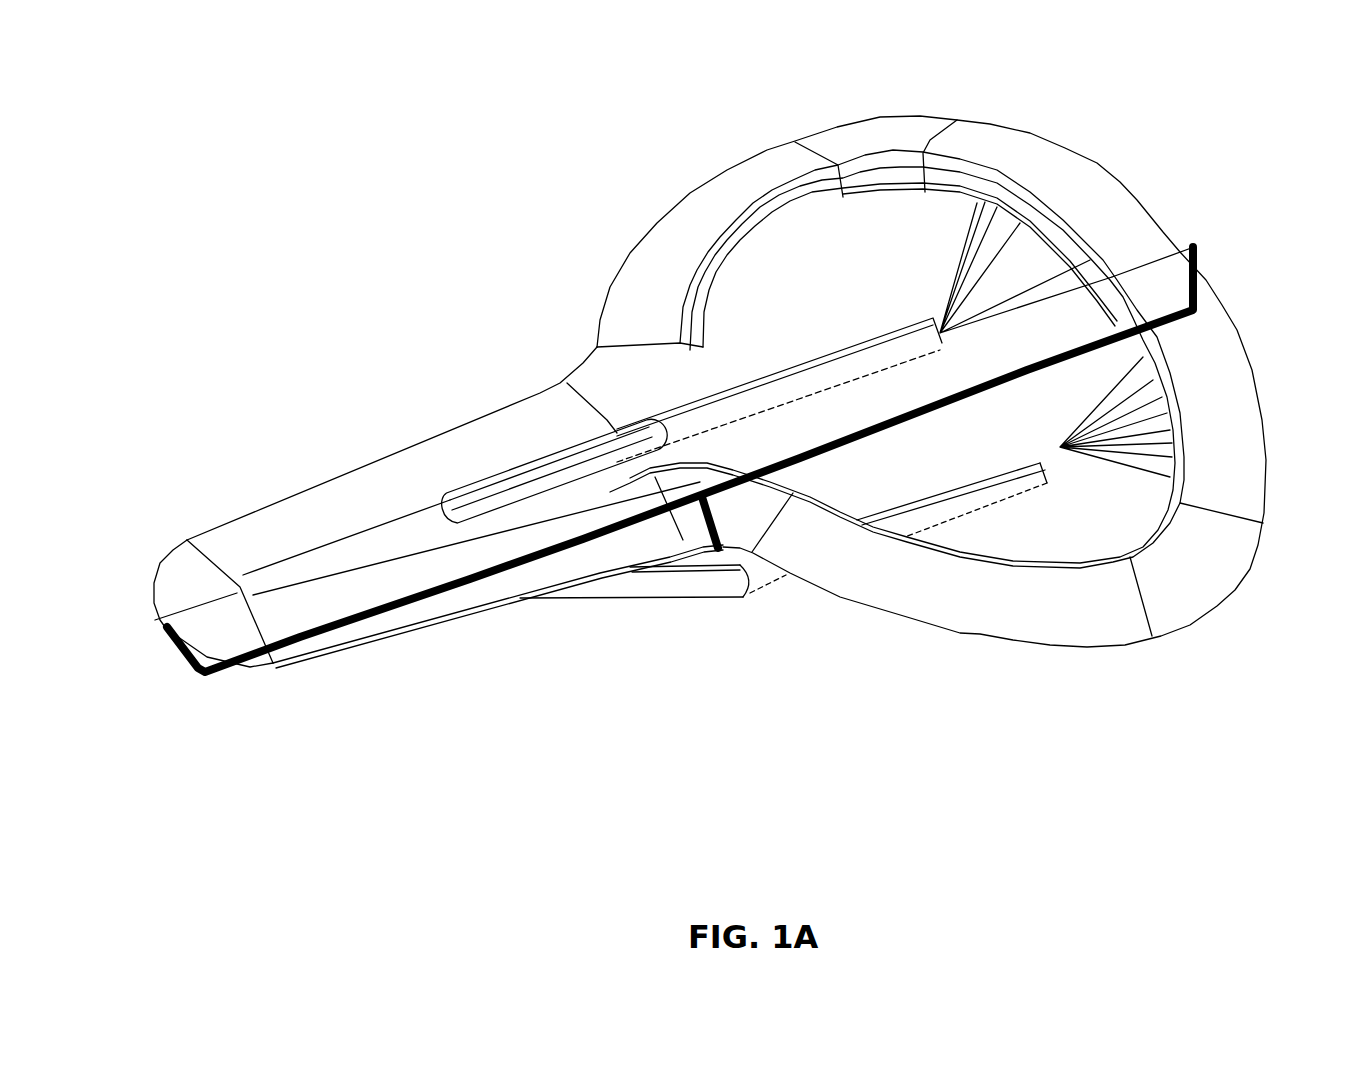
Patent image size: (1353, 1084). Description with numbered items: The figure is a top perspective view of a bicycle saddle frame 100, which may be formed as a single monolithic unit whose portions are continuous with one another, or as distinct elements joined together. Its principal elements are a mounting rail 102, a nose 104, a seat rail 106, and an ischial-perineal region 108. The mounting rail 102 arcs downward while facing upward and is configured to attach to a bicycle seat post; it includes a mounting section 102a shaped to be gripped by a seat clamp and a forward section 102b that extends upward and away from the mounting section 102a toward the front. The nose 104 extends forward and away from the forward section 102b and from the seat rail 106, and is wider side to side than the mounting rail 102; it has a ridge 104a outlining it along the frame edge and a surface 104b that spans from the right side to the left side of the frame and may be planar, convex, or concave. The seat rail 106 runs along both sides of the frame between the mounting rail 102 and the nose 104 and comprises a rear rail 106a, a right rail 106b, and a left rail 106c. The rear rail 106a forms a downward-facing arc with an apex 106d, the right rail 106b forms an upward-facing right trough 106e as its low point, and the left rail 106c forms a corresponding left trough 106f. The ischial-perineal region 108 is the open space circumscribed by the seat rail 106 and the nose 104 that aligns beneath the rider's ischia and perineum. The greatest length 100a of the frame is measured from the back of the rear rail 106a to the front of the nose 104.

The bicycle saddle frame 100 is at (138, 99).
The greatest length 100a is at (718, 550).
The mounting rail 102 is at (668, 629).
The mounting section 102a is at (993, 497).
The forward section 102b is at (1062, 445).
The nose 104 is at (144, 463).
The ridge 104a is at (287, 670).
The surface 104b is at (283, 497).
The seat rail 106 is at (503, 129).
The rear rail 106a is at (1246, 343).
The right rail 106b is at (683, 345).
The left rail 106c is at (907, 627).
The apex 106d is at (1168, 250).
The right trough 106e is at (833, 200).
The left trough 106f is at (1152, 640).
The ischial-perineal region 108 is at (913, 471).